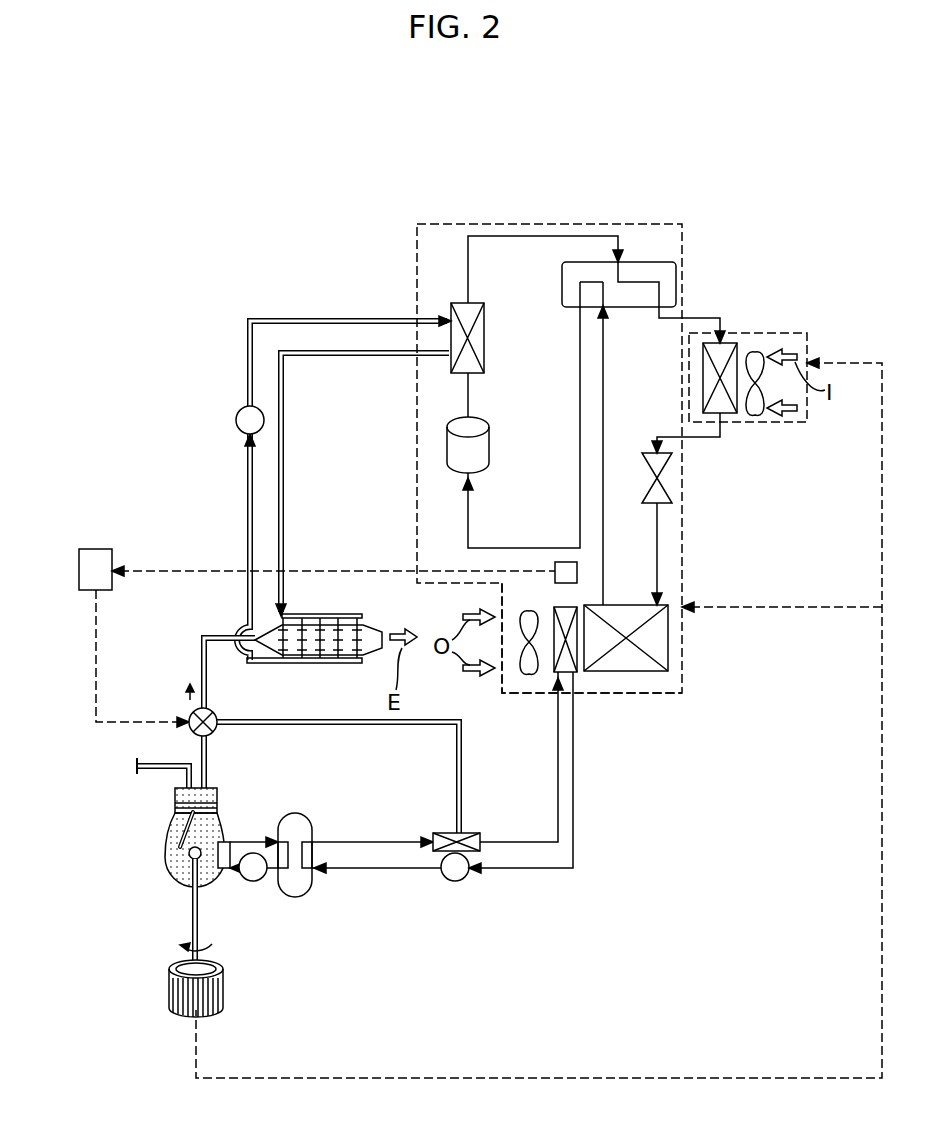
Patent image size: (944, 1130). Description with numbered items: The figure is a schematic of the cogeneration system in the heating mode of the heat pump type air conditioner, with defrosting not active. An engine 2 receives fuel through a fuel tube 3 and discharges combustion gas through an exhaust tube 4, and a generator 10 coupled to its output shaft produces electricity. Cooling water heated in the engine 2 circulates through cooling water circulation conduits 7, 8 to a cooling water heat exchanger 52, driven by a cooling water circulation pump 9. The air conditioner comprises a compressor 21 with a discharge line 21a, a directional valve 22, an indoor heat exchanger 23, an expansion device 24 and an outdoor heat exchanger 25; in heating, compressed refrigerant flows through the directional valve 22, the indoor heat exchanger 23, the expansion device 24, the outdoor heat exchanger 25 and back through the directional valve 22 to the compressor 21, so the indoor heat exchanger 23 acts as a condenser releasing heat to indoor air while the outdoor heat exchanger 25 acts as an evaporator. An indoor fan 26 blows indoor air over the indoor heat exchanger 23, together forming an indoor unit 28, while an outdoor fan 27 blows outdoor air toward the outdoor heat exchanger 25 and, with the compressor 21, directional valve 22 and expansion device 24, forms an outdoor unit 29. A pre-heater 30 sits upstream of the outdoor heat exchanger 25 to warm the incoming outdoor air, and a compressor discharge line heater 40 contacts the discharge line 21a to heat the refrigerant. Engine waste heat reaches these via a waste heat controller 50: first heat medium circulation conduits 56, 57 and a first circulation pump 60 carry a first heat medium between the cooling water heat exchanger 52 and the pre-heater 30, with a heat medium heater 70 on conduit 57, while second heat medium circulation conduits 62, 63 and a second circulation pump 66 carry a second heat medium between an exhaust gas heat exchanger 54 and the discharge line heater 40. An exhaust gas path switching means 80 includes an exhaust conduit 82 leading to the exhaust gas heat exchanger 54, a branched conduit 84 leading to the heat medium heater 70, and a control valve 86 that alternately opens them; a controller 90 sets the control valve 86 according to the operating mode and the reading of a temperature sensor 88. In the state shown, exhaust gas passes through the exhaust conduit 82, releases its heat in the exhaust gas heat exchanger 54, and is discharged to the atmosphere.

The engine 2 is at (175, 862).
The fuel tube 3 is at (157, 768).
The exhaust tube 4 is at (208, 758).
The cooling water circulation conduit 7 is at (243, 842).
The cooling water circulation conduit 8 is at (272, 880).
The cooling water circulation pump 9 is at (256, 882).
The generator 10 is at (175, 990).
The compressor 21 is at (489, 455).
The discharge line 21a is at (468, 388).
The directional valve 22 is at (668, 263).
The indoor heat exchanger 23 is at (725, 348).
The expansion device 24 is at (663, 495).
The outdoor heat exchanger 25 is at (668, 640).
The indoor fan 26 is at (757, 410).
The outdoor fan 27 is at (528, 672).
The indoor unit 28 is at (790, 333).
The outdoor unit 29 is at (660, 693).
The pre-heater 30 is at (574, 665).
The compressor discharge line heater 40 is at (451, 310).
The waste heat controller 50 is at (549, 877).
The cooling water heat exchanger 52 is at (296, 814).
The exhaust gas heat exchanger 54 is at (312, 655).
The first heat medium circulation conduit 56 is at (575, 830).
The first heat medium circulation conduit 57 is at (372, 845).
The first circulation pump 60 is at (465, 882).
The second heat medium circulation conduit 62 is at (247, 362).
The second heat medium circulation conduit 63 is at (284, 398).
The second circulation pump 66 is at (236, 425).
The heat medium heater 70 is at (480, 833).
The exhaust gas path switching means 80 is at (80, 647).
The exhaust conduit 82 is at (201, 660).
The branched conduit 84 is at (370, 725).
The control valve 86 is at (212, 712).
The temperature sensor 88 is at (570, 572).
The controller 90 is at (98, 549).